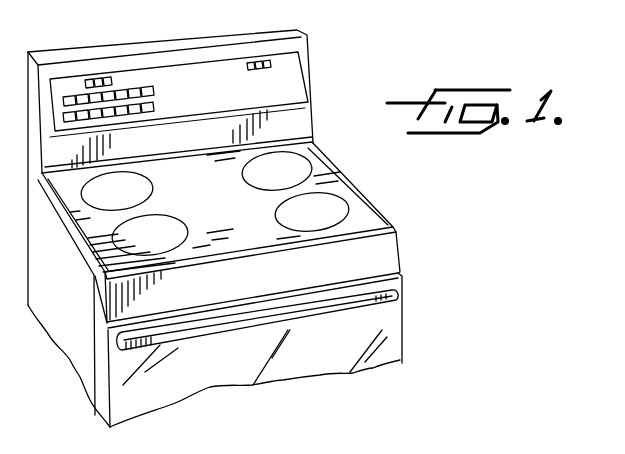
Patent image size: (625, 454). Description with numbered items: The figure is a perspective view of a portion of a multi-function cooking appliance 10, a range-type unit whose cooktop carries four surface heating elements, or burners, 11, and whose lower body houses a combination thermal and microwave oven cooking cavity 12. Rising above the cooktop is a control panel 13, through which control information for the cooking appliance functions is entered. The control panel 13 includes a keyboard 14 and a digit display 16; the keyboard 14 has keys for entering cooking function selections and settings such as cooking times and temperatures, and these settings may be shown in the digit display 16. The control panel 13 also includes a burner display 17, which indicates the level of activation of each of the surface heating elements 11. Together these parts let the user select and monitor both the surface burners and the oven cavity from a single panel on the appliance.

The multi-function cooking appliance 10 is at (251, 213).
The surface heating elements 11 is at (297, 166).
The combination thermal and microwave oven cooking cavity 12 is at (370, 330).
The control panel 13 is at (204, 86).
The keyboard 14 is at (128, 92).
The digit display 16 is at (92, 80).
The burner display 17 is at (268, 62).